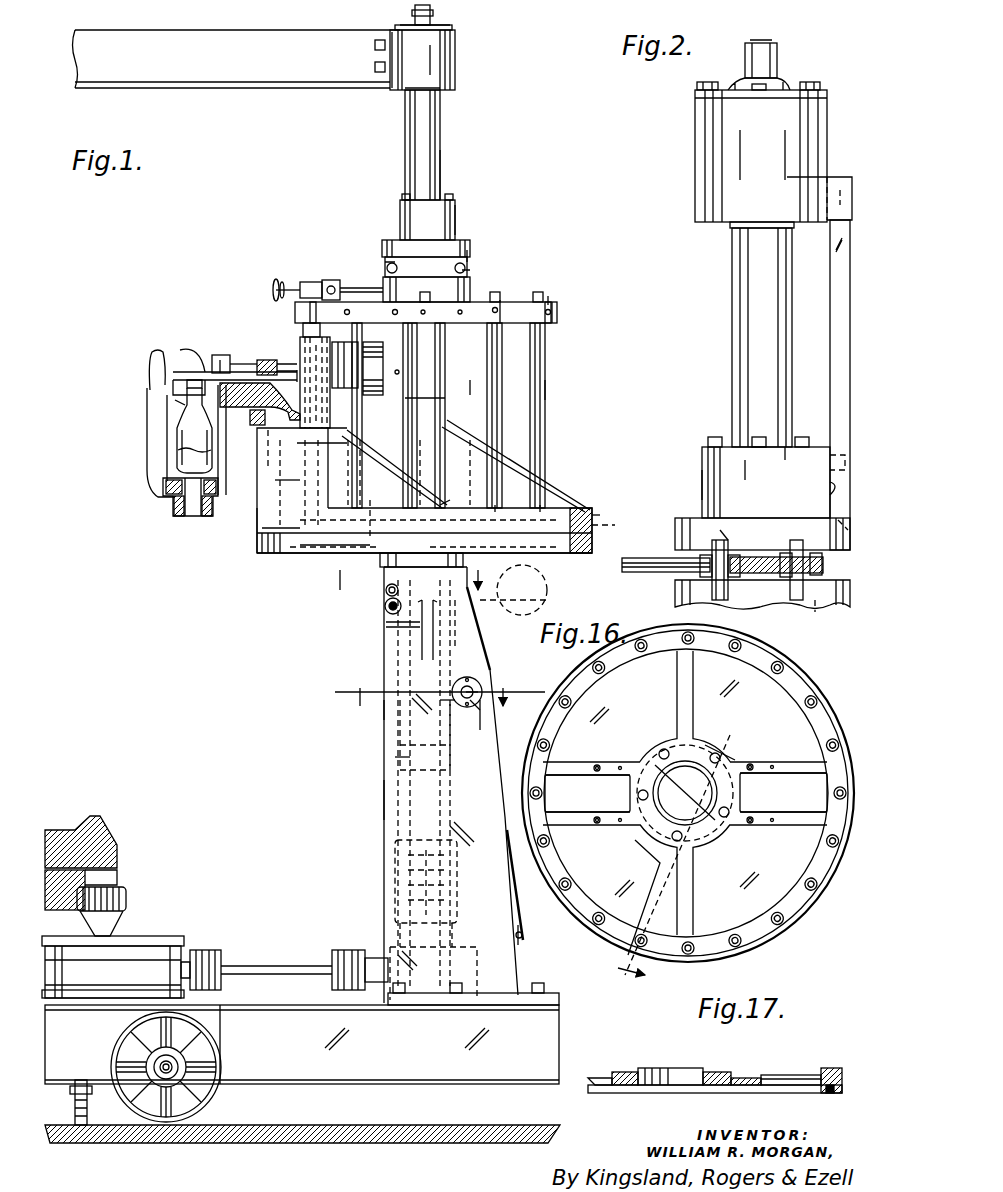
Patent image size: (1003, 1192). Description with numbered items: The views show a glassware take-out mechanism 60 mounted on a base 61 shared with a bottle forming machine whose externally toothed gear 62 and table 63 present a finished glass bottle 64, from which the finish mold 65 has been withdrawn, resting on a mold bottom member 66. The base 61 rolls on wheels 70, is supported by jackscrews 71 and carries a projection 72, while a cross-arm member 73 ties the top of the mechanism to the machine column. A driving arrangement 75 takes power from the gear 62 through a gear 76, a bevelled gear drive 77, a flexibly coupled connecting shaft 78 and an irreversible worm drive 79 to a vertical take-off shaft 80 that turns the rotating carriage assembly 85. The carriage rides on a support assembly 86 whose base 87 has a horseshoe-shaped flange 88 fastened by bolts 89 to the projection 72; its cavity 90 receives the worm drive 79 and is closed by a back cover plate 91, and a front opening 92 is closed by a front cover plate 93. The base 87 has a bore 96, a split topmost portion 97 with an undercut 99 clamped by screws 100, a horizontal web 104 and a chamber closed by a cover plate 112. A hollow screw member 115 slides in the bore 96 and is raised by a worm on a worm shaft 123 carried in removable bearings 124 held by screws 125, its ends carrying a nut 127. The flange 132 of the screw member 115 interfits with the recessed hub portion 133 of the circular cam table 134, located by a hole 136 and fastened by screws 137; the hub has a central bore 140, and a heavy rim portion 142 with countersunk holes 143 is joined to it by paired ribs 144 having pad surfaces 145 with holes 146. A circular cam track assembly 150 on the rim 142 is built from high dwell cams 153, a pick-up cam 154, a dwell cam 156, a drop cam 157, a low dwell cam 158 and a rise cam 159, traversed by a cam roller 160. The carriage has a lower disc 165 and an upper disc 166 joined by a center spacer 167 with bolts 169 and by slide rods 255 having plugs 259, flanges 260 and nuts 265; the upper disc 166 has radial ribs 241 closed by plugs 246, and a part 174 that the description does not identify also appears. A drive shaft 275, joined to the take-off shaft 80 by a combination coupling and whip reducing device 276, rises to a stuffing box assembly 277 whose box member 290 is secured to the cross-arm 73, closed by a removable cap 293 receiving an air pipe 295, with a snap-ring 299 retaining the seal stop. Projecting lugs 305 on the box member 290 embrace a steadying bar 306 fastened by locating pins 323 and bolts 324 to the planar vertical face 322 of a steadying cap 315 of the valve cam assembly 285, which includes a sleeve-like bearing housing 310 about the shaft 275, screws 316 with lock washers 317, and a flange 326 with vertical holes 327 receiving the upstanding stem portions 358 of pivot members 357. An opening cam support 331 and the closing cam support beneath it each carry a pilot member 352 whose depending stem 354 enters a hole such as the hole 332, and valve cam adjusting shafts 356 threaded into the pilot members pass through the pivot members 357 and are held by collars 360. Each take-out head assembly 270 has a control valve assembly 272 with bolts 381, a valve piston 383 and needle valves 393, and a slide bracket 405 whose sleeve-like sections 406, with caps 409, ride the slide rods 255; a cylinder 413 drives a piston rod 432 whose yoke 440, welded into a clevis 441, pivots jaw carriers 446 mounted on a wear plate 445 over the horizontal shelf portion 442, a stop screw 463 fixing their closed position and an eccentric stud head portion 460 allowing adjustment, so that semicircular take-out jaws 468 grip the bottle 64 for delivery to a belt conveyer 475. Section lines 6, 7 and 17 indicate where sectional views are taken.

In FIG. 1, the glassware take-out mechanism 60 is at (572, 300).
In FIG. 1, the base 61 is at (235, 1003).
In FIG. 1, the externally toothed gear 62 is at (96, 856).
In FIG. 1, the table 63 is at (78, 824).
In FIG. 1, the glass bottle 64 is at (190, 445).
In FIG. 1, the finish mold 65 is at (160, 410).
In FIG. 1, the mold bottom member 66 is at (167, 495).
In FIG. 1, the wheels 70 is at (162, 1122).
In FIG. 1, the jackscrews 71 is at (84, 1128).
In FIG. 1, the projection 72 is at (288, 1075).
In FIG. 1, the cross-arm member 73 is at (218, 80).
In FIG. 1, the driving arrangement 75 is at (215, 948).
In FIG. 1, the gear 76 is at (127, 896).
In FIG. 1, the bevelled gear drive 77 is at (120, 950).
In FIG. 1, the flexibly coupled connecting shaft 78 is at (290, 966).
In FIG. 1, the irreversible worm drive 79 is at (360, 968).
In FIG. 1, the vertical take-off shaft 80 is at (462, 910).
In FIG. 1, the rotating carriage assembly 85 is at (549, 398).
In FIG. 1, the support assembly 86 is at (380, 670).
In FIG. 1, the base 87 is at (405, 756).
In FIG. 1, the horseshoe-shaped flange 88 is at (560, 998).
In FIG. 1, the bolts 89 is at (540, 982).
In FIG. 1, the cavity 90 is at (483, 704).
In FIG. 1, the back cover plate 91 is at (386, 802).
In FIG. 1, the front opening 92 is at (503, 846).
In FIG. 1, the front cover plate 93 is at (523, 932).
In FIG. 1, the vertical cylindrical bore 96 is at (450, 632).
In FIG. 1, the topmost portion 97 is at (398, 638).
In FIG. 1, the undercut 99 is at (386, 610).
In FIG. 1, the screws 100 is at (388, 594).
In FIG. 1, the horizontal web 104 is at (400, 745).
In FIG. 1, the cover plate 112 is at (382, 705).
In FIG. 1, the hollow screw member 115 is at (400, 770).
In FIG. 1, the worm shaft 123 is at (478, 688).
In FIG. 1, the removable bearings 124 is at (482, 690).
In FIG. 1, the screws 125 is at (470, 708).
In FIG. 1, the nut 127 is at (452, 700).
In FIG. 1, the flange 132 is at (372, 520).
In FIG. 1, the recessed hub portion 133 is at (348, 545).
In FIG. 16, the recessed hub portion 133 is at (680, 752).
In FIG. 17, the recessed hub portion 133 is at (750, 1078).
In FIG. 1, the circular cam table 134 is at (260, 558).
In FIG. 16, the circular cam table 134 is at (795, 928).
In FIG. 17, the circular cam table 134 is at (700, 1100).
In FIG. 16, the hole 136 is at (655, 805).
In FIG. 17, the hole 136 is at (712, 1078).
In FIG. 1, the screws 137 is at (488, 565).
In FIG. 16, the central bore 140 is at (702, 793).
In FIG. 17, the central bore 140 is at (672, 1080).
In FIG. 1, the rim portion 142 is at (257, 545).
In FIG. 16, the rim portion 142 is at (758, 936).
In FIG. 17, the rim portion 142 is at (836, 1068).
In FIG. 16, the countersunk holes 143 is at (810, 700).
In FIG. 17, the countersunk holes 143 is at (830, 1094).
In FIG. 16, the ribs 144 is at (800, 838).
In FIG. 16, the pad surfaces 145 is at (772, 823).
In FIG. 17, the pad surfaces 145 is at (602, 1075).
In FIG. 16, the holes 146 is at (790, 795).
In FIG. 1, the circular cam track assembly 150 is at (578, 506).
In FIG. 1, the high dwell cams 153 is at (408, 400).
In FIG. 1, the pick-up cam 154 is at (265, 447).
In FIG. 1, the dwell cam 156 is at (292, 473).
In FIG. 1, the drop cam 157 is at (440, 460).
In FIG. 1, the low dwell cam 158 is at (546, 510).
In FIG. 1, the rise cam 159 is at (490, 468).
In FIG. 1, the cam roller 160 is at (270, 435).
In FIG. 1, the lower table or disc 165 is at (593, 518).
In FIG. 1, the upper table or disc 166 is at (560, 305).
In FIG. 1, the center spacer 167 is at (472, 385).
In FIG. 1, the bolts 169 is at (459, 490).
In FIG. 1, the bolt 174 is at (500, 510).
In FIG. 1, the radial rib 241 is at (505, 300).
In FIG. 1, the plug 246 is at (495, 312).
In FIG. 1, the slide rods 255 is at (332, 411).
In FIG. 1, the plugs 259 is at (475, 265).
In FIG. 1, the flange 260 is at (550, 298).
In FIG. 1, the nut 265 is at (595, 526).
In FIG. 1, the take-out head assembly 270 is at (255, 360).
In FIG. 1, the control valve assembly 272 is at (290, 280).
In FIG. 1, the drive shaft 275 is at (418, 143).
In FIG. 2, the drive shaft 275 is at (762, 294).
In FIG. 1, the combination coupling and whip reducing device 276 is at (395, 858).
In FIG. 1, the stuffing box assembly 277 is at (458, 60).
In FIG. 2, the stuffing box assembly 277 is at (692, 133).
In FIG. 1, the valve cam assembly 285 is at (456, 228).
In FIG. 2, the valve cam assembly 285 is at (700, 480).
In FIG. 1, the box member 290 is at (408, 72).
In FIG. 2, the box member 290 is at (722, 172).
In FIG. 1, the removable cap 293 is at (412, 22).
In FIG. 2, the removable cap 293 is at (737, 84).
In FIG. 1, the air pipe 295 is at (433, 12).
In FIG. 2, the air pipe 295 is at (780, 62).
In FIG. 1, the snap-ring 299 is at (445, 92).
In FIG. 2, the snap-ring 299 is at (735, 226).
In FIG. 2, the projecting lug 305 is at (815, 212).
In FIG. 1, the steadying bar 306 is at (440, 160).
In FIG. 2, the steadying bar 306 is at (832, 328).
In FIG. 1, the sleeve-like bearing housing 310 is at (410, 248).
In FIG. 1, the steadying cap 315 is at (400, 215).
In FIG. 2, the steadying cap 315 is at (705, 460).
In FIG. 1, the screws 316 is at (449, 199).
In FIG. 2, the screws 316 is at (758, 436).
In FIG. 2, the lock washers 317 is at (800, 450).
In FIG. 2, the planar vertical face 322 is at (832, 490).
In FIG. 2, the locating pins 323 is at (845, 523).
In FIG. 2, the bolts 324 is at (835, 455).
In FIG. 1, the flange 326 is at (470, 255).
In FIG. 2, the flange 326 is at (682, 520).
In FIG. 2, the vertical holes 327 is at (730, 538).
In FIG. 1, the opening cam support 331 is at (471, 282).
In FIG. 2, the opening cam support 331 is at (690, 582).
In FIG. 2, the hole 332 is at (818, 610).
In FIG. 2, the pilot member 352 is at (823, 576).
In FIG. 2, the depending stem 354 is at (790, 590).
In FIG. 1, the valve cam adjusting shafts 356 is at (471, 268).
In FIG. 2, the valve cam adjusting shafts 356 is at (660, 560).
In FIG. 2, the pivot members 357 is at (722, 598).
In FIG. 2, the stem portions 358 is at (735, 547).
In FIG. 1, the collars 360 is at (462, 264).
In FIG. 2, the collars 360 is at (742, 578).
In FIG. 1, the bolts 381 is at (292, 280).
In FIG. 1, the valve piston 383 is at (350, 286).
In FIG. 1, the valves 393 is at (325, 280).
In FIG. 1, the slide bracket 405 is at (365, 430).
In FIG. 1, the sleeve-like sections 406 is at (270, 413).
In FIG. 1, the caps 409 is at (400, 373).
In FIG. 1, the cylinder 413 is at (370, 368).
In FIG. 1, the piston rod 432 is at (292, 368).
In FIG. 1, the yoke 440 is at (227, 355).
In FIG. 1, the clevis 441 is at (268, 358).
In FIG. 1, the horizontal shelf portion 442 is at (185, 408).
In FIG. 1, the wear plate 445 is at (218, 370).
In FIG. 1, the jaw carriers 446 is at (170, 374).
In FIG. 1, the head portion 460 is at (180, 372).
In FIG. 1, the stop screw 463 is at (185, 396).
In FIG. 1, the take-out jaws 468 is at (200, 370).
In FIG. 1, the belt conveyer 475 is at (530, 592).
In FIG. 1, the section line 6 is at (412, 575).
In FIG. 1, the section line 7 is at (440, 695).
In FIG. 16, the section line 17— 17 is at (674, 831).